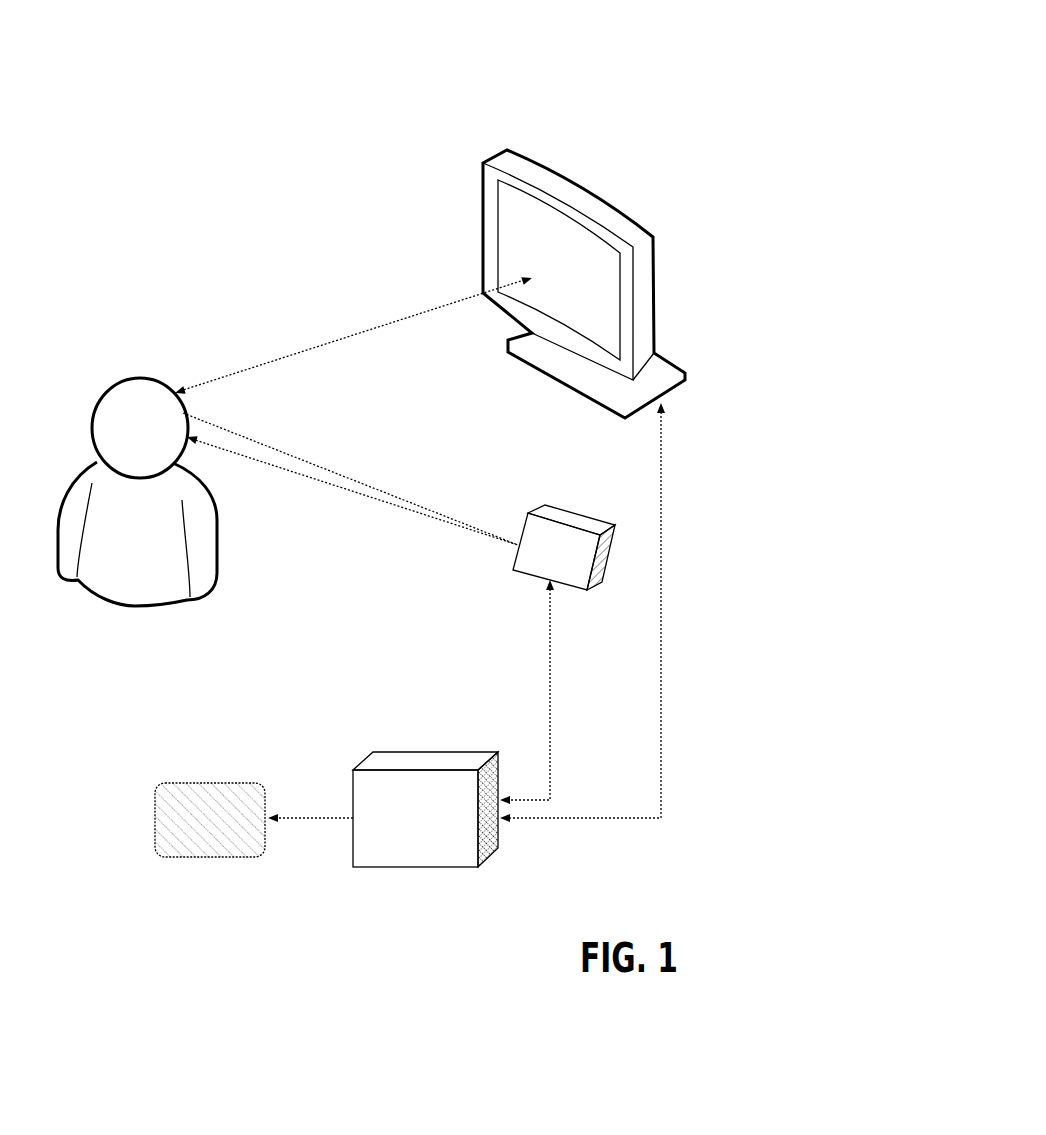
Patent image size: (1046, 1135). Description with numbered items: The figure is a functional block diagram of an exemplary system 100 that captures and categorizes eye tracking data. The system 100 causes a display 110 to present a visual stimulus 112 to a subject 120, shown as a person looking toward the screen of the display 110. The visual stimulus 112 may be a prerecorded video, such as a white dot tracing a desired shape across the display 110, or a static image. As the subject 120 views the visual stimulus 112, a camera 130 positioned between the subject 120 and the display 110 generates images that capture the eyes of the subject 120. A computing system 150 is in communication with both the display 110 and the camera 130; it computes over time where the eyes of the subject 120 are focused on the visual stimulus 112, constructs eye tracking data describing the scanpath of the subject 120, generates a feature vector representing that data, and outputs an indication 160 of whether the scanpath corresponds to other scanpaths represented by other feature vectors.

The system 100 is at (631, 48).
The display 110 is at (655, 238).
The visual stimulus 112 is at (610, 336).
The subject 120 is at (102, 396).
The camera 130 is at (570, 513).
The computing system 150 is at (437, 752).
The indication 160 is at (212, 783).